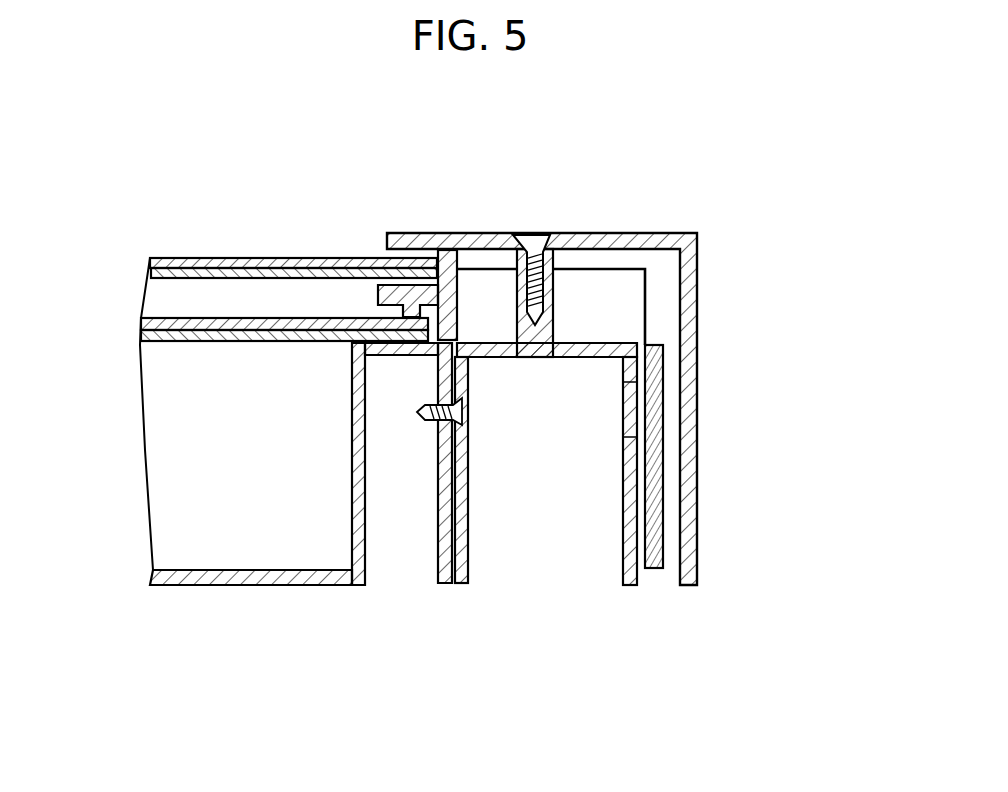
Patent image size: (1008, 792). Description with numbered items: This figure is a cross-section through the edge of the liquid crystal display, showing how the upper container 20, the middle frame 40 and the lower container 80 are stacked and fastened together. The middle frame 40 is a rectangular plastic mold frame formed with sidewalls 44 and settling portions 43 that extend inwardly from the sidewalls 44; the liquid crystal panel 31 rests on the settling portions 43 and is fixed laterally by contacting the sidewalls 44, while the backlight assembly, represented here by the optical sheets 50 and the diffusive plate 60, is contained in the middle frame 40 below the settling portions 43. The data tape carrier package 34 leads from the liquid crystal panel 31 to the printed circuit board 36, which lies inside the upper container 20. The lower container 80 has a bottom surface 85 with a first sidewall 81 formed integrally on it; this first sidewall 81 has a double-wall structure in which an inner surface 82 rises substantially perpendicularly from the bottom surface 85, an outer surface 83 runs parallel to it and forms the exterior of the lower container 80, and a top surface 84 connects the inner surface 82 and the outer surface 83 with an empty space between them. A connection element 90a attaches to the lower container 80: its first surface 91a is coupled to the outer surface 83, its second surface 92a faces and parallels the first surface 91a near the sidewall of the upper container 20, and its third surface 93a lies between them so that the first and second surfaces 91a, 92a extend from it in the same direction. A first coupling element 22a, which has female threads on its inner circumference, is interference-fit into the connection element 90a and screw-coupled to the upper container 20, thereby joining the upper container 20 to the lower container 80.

The upper container 20 is at (611, 242).
The first coupling element 22a is at (560, 240).
The liquid crystal panel 31 is at (188, 258).
The data tape carrier package 34 is at (623, 263).
The printed circuit board 36 is at (657, 547).
The middle frame 40 is at (419, 217).
The settling portion 43 is at (384, 297).
The sidewall 44 is at (448, 255).
The optical sheet 50 is at (141, 326).
The diffusive plate 60 is at (141, 333).
The lower container 80 is at (306, 502).
The first sidewall 81 is at (407, 545).
The inner surface 82 is at (367, 565).
The outer surface 83 is at (448, 560).
The top surface 84 is at (400, 356).
The bottom surface 85 is at (208, 585).
The connection element 90a is at (669, 417).
The first surface 91a is at (460, 470).
The second surface 92a is at (627, 508).
The third surface 93a is at (598, 352).